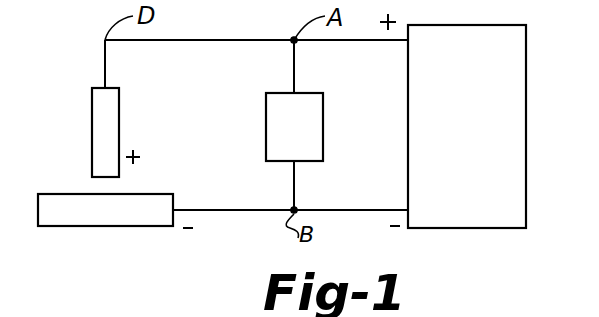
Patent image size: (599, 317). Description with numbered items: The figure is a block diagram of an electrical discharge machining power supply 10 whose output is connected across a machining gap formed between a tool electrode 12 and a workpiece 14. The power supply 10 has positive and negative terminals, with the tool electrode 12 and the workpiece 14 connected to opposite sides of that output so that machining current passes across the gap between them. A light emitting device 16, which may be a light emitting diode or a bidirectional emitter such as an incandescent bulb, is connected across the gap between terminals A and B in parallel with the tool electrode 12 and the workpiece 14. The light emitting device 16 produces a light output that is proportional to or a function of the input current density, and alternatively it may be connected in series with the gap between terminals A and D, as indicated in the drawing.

The electrical discharge machining power supply 10 is at (486, 131).
The tool electrode 12 is at (110, 136).
The workpiece 14 is at (145, 222).
The light emitting device 16 is at (312, 131).